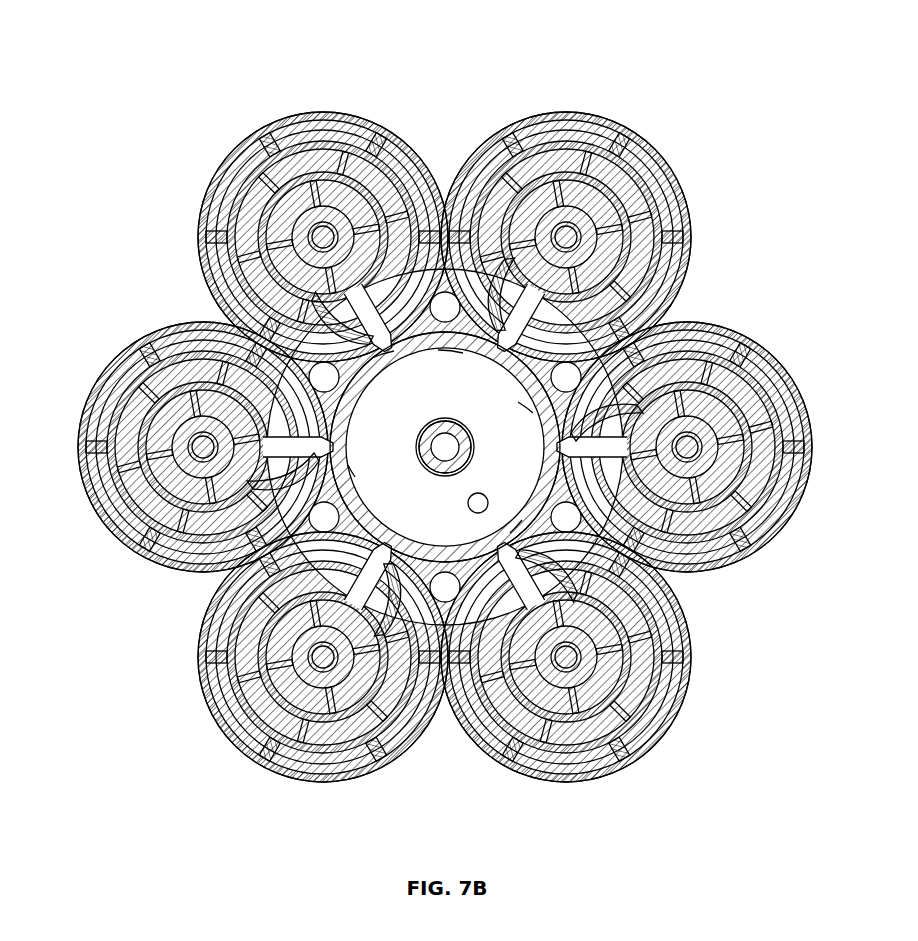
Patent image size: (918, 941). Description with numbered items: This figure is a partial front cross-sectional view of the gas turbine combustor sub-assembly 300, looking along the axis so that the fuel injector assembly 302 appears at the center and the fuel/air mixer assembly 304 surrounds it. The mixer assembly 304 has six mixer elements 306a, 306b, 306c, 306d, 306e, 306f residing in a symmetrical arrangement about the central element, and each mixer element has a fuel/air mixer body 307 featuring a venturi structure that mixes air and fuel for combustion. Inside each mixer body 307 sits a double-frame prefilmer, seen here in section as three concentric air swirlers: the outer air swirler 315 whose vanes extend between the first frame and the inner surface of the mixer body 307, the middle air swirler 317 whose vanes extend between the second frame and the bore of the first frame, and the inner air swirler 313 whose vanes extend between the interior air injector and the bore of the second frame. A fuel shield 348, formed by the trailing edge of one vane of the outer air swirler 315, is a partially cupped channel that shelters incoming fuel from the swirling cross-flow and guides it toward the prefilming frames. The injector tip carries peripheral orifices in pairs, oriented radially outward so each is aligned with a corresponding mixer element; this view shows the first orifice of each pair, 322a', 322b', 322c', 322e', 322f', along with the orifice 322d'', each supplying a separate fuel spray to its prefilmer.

The gas turbine combustor sub-assembly 300 is at (177, 45).
The fuel injector assembly 302 is at (335, 335).
The fuel/air mixer assembly 304 is at (752, 262).
The mixer element 306a is at (570, 112).
The mixer element 306b is at (705, 323).
The mixer element 306c is at (685, 705).
The mixer element 306d is at (200, 658).
The mixer element 306e is at (190, 324).
The mixer element 306f is at (322, 113).
The fuel/air mixer body 307 is at (350, 113).
The inner air swirler 313 is at (262, 200).
The outer air swirler 315 is at (213, 210).
The middle air swirler 317 is at (240, 197).
The fuel shield 348 is at (380, 322).
The first peripheral orifice 322a' is at (431, 370).
The first peripheral orifice 322b' is at (495, 398).
The first peripheral orifice 322c' is at (513, 492).
The second peripheral orifice 322d'' is at (453, 512).
The first peripheral orifice 322e' is at (379, 451).
The first peripheral orifice 322f' is at (407, 383).